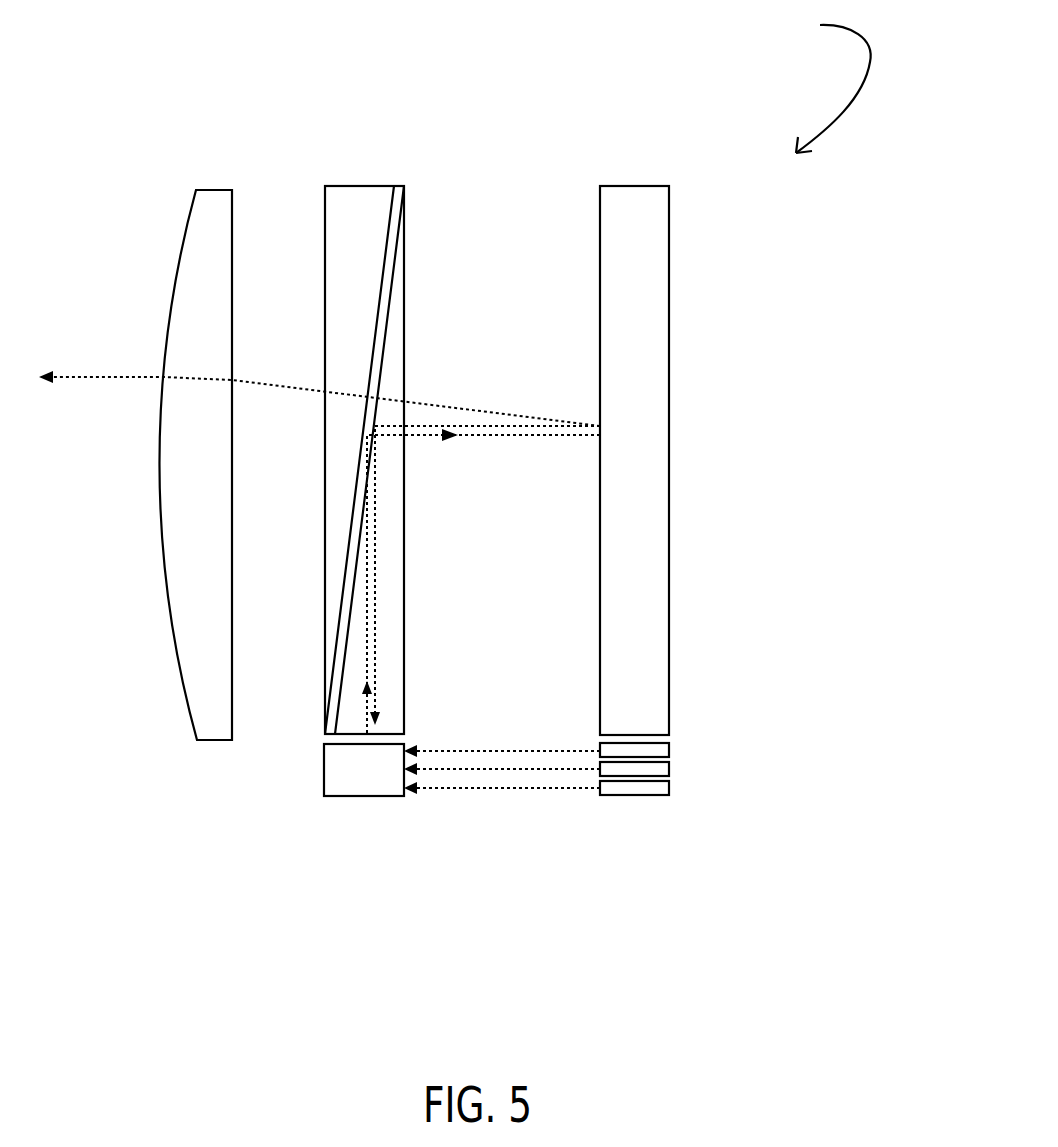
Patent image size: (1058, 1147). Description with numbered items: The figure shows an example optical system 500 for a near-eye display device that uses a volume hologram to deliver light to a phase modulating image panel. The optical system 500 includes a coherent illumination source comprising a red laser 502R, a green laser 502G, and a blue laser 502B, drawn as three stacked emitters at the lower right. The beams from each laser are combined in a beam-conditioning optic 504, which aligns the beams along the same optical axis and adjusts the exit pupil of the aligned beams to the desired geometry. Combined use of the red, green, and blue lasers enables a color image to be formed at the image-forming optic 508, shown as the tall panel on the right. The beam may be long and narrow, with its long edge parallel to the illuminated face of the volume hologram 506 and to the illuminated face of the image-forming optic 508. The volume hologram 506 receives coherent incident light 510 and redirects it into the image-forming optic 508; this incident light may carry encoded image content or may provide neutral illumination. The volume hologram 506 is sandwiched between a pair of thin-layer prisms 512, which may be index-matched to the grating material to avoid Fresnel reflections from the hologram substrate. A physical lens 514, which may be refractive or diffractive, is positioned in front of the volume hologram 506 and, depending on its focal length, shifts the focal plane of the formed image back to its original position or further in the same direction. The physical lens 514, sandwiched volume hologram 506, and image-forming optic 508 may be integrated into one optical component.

The optical system 500 is at (825, 83).
The red laser 502R is at (669, 750).
The green laser 502G is at (669, 769).
The blue laser 502B is at (669, 787).
The beam-conditioning optic 504 is at (384, 782).
The volume hologram 506 is at (392, 287).
The image-forming optic 508 is at (669, 460).
The coherent incident light 510 is at (363, 620).
The thin-layer prisms 512 is at (364, 186).
The physical lens 514 is at (174, 275).